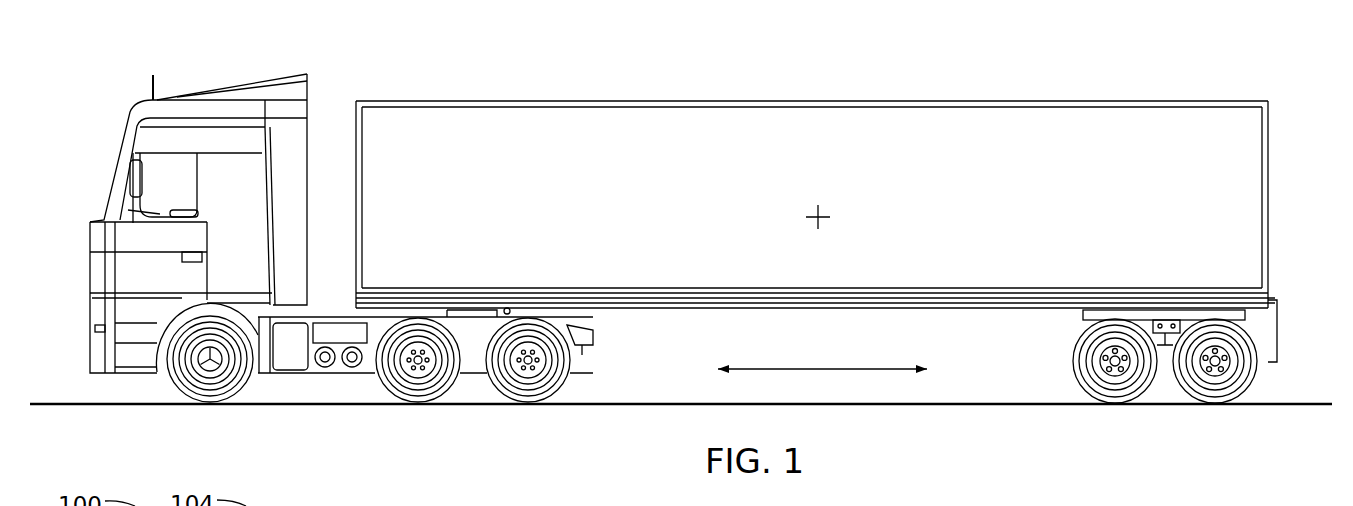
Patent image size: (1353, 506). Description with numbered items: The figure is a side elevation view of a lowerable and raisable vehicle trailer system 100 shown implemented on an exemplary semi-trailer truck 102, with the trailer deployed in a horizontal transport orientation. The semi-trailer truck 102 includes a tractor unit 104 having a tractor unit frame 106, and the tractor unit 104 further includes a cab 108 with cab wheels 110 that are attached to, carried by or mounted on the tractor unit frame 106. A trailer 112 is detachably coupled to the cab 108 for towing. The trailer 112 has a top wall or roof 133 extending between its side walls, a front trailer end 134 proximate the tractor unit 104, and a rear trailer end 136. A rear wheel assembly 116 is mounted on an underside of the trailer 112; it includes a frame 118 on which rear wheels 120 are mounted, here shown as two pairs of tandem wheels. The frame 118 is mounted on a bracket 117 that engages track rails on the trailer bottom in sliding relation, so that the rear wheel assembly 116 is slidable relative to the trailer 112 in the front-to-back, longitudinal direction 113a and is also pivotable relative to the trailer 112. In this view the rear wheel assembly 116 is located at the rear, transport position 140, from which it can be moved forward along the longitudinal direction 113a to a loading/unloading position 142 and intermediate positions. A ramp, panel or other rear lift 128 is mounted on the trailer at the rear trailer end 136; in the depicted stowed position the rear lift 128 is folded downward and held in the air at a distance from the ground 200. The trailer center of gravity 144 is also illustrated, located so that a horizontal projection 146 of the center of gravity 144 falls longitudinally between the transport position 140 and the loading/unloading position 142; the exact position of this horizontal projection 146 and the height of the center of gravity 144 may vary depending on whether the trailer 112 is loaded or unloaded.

The vehicle trailer system 100 is at (354, 233).
The semi-trailer truck 102 is at (851, 244).
The tractor unit 104 is at (261, 76).
The tractor unit frame 106 is at (340, 375).
The cab 108 is at (293, 132).
The cab wheels 110 is at (187, 396).
The trailer 112 is at (1283, 214).
The longitudinal direction 113a is at (808, 370).
The rear wheel assembly 116 is at (1117, 354).
The bracket 117 is at (1147, 312).
The frame 118 is at (1167, 356).
The rear wheels 120 is at (1080, 387).
The rear lift 128 is at (1280, 332).
The roof 133 is at (986, 101).
The front trailer end 134 is at (354, 200).
The rear trailer end 136 is at (1270, 156).
The transport position 140 is at (1168, 312).
The loading/unloading position 142 is at (673, 308).
The center of gravity 144 is at (820, 215).
The horizontal projection 146 is at (818, 308).
The ground 200 is at (1293, 403).